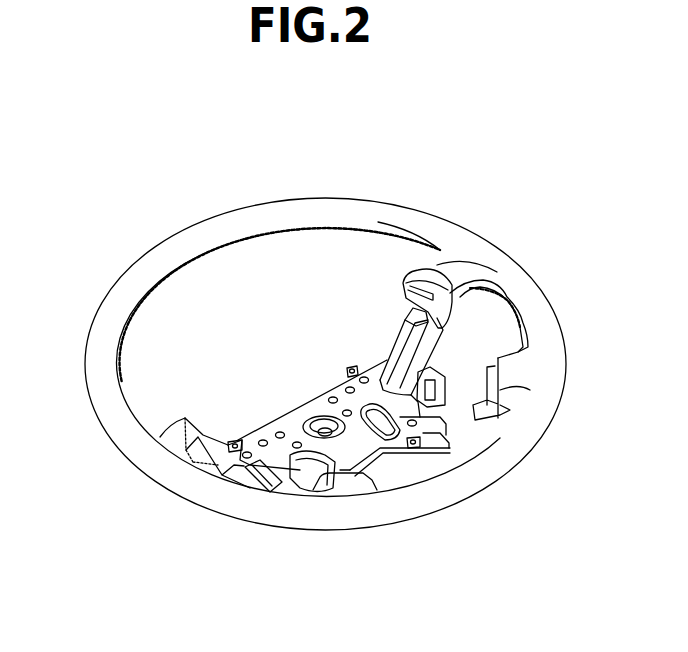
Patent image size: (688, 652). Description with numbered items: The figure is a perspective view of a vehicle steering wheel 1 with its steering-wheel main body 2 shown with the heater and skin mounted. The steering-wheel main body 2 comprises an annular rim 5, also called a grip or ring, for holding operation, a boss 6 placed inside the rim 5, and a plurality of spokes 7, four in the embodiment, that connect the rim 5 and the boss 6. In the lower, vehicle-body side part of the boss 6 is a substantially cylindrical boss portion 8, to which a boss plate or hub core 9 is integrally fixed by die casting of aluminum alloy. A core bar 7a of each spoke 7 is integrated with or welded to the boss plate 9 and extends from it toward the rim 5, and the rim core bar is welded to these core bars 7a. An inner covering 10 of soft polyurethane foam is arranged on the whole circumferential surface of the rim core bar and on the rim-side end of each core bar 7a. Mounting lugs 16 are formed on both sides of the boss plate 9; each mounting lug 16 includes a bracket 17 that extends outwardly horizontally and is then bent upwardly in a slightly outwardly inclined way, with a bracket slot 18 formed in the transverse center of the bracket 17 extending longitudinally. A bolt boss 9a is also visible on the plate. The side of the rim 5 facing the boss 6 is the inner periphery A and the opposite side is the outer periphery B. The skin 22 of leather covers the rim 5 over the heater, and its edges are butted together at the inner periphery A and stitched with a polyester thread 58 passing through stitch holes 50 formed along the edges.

The steering wheel 1 is at (124, 170).
The steering-wheel main body 2 is at (94, 239).
The rim 5 is at (377, 200).
The boss 6 is at (282, 377).
The spokes 7 is at (390, 323).
The core bar of spoke 7a is at (387, 357).
The boss portion 8 is at (308, 427).
The boss plate 9 is at (333, 390).
The mounting bosses 9a is at (347, 367).
The inner covering 10 is at (426, 278).
The mounting lugs 16 is at (452, 343).
The bracket 17 is at (447, 382).
The bracket slot 18 is at (470, 412).
The skin 22 is at (317, 207).
The stitch holes 50 is at (260, 232).
The thread 58 is at (293, 228).
The inner periphery A is at (213, 247).
The outer periphery B is at (118, 447).